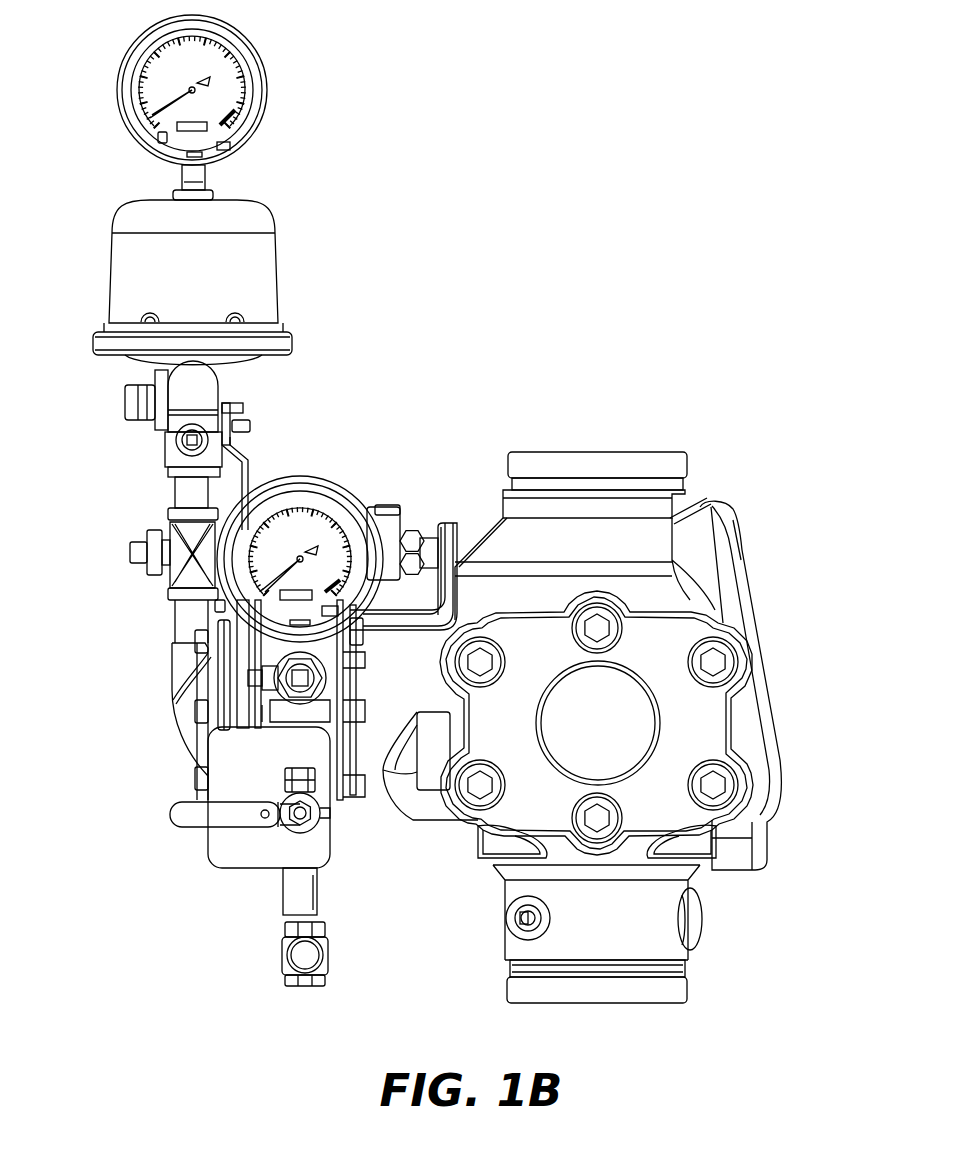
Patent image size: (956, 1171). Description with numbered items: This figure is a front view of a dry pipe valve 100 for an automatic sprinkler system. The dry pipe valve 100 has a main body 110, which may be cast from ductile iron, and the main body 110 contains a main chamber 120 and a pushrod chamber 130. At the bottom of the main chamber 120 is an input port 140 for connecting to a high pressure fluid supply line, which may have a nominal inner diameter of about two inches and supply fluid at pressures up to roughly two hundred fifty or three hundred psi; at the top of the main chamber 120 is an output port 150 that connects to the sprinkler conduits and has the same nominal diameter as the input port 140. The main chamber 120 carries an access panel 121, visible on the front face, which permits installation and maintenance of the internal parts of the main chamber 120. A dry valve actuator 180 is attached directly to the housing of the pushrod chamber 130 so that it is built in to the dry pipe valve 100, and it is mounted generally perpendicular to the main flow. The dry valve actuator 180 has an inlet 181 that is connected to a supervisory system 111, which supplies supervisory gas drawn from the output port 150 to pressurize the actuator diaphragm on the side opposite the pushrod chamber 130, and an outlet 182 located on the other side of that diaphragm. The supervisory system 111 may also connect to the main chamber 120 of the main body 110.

The dry pipe valve 100 is at (740, 470).
The main body 110 is at (743, 560).
The supervisory system 111 is at (113, 165).
The main chamber 120 is at (703, 703).
The access panel 121 is at (703, 750).
The pushrod chamber 130 is at (335, 808).
The input port 140 is at (650, 1005).
The output port 150 is at (587, 452).
The dry valve actuator 180 is at (178, 733).
The inlet 181 is at (175, 640).
The outlet 182 is at (283, 893).